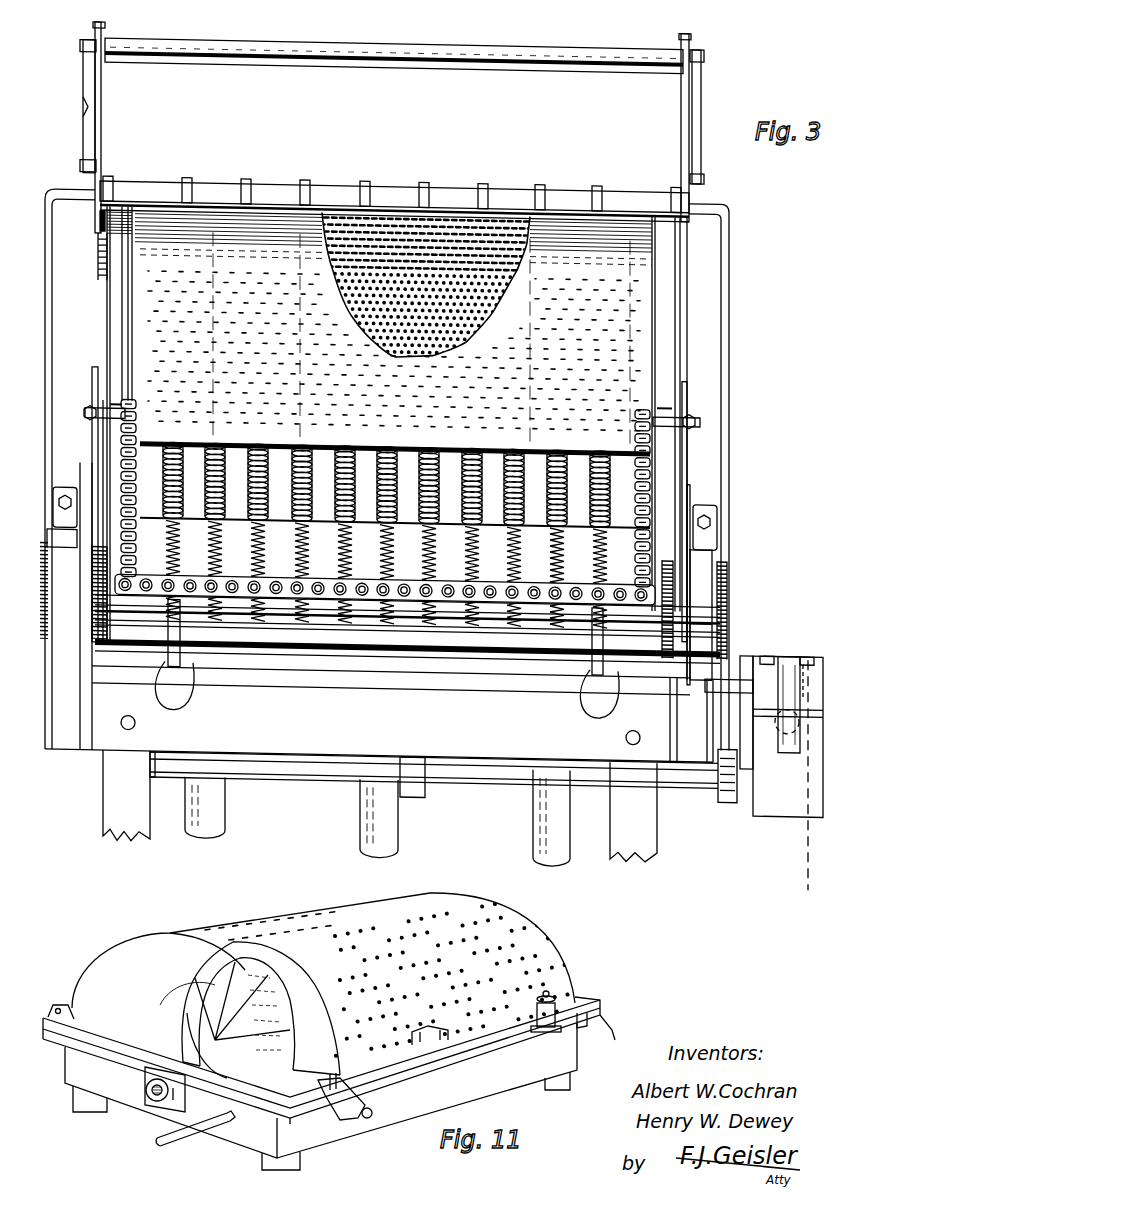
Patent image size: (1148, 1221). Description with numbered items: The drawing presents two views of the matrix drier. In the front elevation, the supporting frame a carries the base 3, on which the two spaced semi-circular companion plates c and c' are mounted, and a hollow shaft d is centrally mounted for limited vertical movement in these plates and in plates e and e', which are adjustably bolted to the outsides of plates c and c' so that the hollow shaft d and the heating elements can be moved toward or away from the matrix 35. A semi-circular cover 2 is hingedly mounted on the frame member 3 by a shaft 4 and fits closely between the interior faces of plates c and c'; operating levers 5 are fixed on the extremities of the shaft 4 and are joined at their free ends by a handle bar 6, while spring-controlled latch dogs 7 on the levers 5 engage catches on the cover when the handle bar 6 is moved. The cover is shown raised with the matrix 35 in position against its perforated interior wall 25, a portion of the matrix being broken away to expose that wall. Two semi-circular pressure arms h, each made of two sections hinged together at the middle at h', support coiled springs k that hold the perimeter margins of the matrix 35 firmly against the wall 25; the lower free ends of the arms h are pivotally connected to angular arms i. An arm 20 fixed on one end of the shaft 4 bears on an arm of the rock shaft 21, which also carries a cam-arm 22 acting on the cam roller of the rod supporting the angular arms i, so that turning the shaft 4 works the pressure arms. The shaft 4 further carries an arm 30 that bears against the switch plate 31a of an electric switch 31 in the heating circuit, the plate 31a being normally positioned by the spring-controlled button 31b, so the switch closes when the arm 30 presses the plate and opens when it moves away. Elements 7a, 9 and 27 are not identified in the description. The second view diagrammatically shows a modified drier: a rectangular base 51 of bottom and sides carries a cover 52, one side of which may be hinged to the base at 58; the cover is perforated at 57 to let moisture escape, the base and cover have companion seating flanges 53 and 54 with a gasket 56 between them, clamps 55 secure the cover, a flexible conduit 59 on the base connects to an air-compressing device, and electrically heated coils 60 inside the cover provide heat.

In FIG. 3, the cover 2 is at (562, 210).
In FIG. 3, the base 3 is at (288, 735).
In FIG. 3, the shaft 4 is at (728, 680).
In FIG. 3, the operating levers 5 is at (46, 327).
In FIG. 3, the handle bar 6 is at (500, 62).
In FIG. 3, the latch dogs 7 is at (86, 147).
In FIG. 3, the bracket plate 7a is at (90, 92).
In FIG. 3, the springs 9 is at (228, 445).
In FIG. 3, the arm 20 is at (768, 680).
In FIG. 3, the rock shaft 21 is at (356, 772).
In FIG. 3, the cam-arm 22 is at (420, 797).
In FIG. 3, the perforated interior wall 25 is at (432, 230).
In FIG. 3, the roller 27 is at (226, 818).
In FIG. 3, the arm 30 is at (787, 745).
In FIG. 3, the electric switch 31 is at (762, 802).
In FIG. 3, the switch plate 31a is at (800, 665).
In FIG. 3, the spring-controlled button 31b is at (794, 777).
In FIG. 3, the matrix 35 is at (218, 240).
In FIG. 3, the supporting frame a is at (150, 808).
In FIG. 3, the semi-circular companion plate c is at (102, 494).
In FIG. 3, the semi-circular companion plate c' is at (695, 511).
In FIG. 3, the hollow shaft d is at (728, 592).
In FIG. 3, the plate e is at (75, 634).
In FIG. 3, the plate e' is at (711, 584).
In FIG. 3, the pressure arms h is at (409, 425).
In FIG. 3, the hinge h' is at (385, 397).
In FIG. 3, the angular arms i is at (186, 685).
In FIG. 3, the coiled springs k is at (316, 586).
In FIG. 11, the rectangular base 51 is at (415, 1100).
In FIG. 11, the cover 52 is at (345, 912).
In FIG. 11, the seating flange 53 is at (592, 1000).
In FIG. 11, the seating flange 54 is at (604, 1020).
In FIG. 11, the clamps 55 is at (560, 1025).
In FIG. 11, the gasket 56 is at (602, 1004).
In FIG. 11, the perforations 57 is at (310, 930).
In FIG. 11, the hinge 58 is at (58, 1003).
In FIG. 11, the flexible conduit 59 is at (195, 1126).
In FIG. 11, the electrically heated coils 60 is at (185, 958).